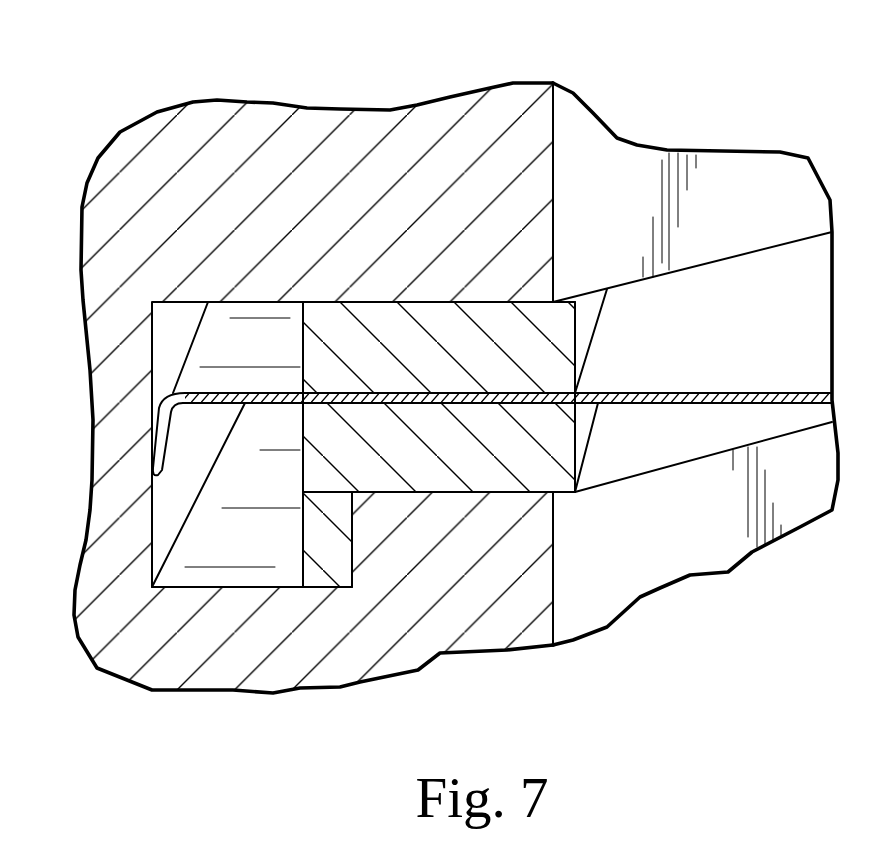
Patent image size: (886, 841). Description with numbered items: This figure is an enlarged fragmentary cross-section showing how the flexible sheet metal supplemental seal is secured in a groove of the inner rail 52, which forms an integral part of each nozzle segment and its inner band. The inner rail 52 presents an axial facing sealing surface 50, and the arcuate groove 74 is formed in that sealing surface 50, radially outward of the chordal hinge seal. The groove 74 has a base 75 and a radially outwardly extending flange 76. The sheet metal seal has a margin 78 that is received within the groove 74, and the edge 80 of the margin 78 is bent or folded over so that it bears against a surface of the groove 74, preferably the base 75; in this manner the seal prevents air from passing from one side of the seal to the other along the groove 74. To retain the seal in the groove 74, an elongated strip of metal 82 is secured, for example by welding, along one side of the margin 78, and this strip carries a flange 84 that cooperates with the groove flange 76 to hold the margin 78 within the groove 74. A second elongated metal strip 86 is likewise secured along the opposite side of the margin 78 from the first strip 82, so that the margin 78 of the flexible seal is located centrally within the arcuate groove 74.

The axial facing surface 50 is at (608, 156).
The inner rail 52 is at (222, 670).
The groove 74 is at (185, 302).
The base of groove 75 is at (152, 518).
The radially outwardly extending flange 76 is at (412, 548).
The margin 78 is at (428, 403).
The edge 80 is at (167, 433).
The elongated strip of metal 82 is at (550, 433).
The flange 84 is at (325, 568).
The elongated metal strip 86 is at (392, 328).